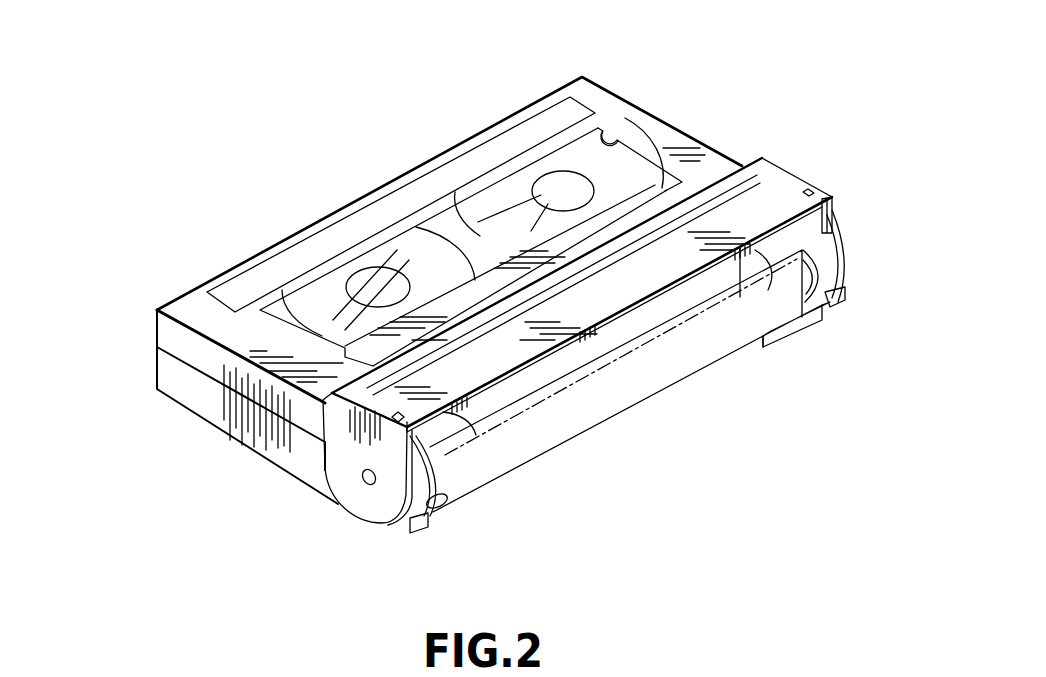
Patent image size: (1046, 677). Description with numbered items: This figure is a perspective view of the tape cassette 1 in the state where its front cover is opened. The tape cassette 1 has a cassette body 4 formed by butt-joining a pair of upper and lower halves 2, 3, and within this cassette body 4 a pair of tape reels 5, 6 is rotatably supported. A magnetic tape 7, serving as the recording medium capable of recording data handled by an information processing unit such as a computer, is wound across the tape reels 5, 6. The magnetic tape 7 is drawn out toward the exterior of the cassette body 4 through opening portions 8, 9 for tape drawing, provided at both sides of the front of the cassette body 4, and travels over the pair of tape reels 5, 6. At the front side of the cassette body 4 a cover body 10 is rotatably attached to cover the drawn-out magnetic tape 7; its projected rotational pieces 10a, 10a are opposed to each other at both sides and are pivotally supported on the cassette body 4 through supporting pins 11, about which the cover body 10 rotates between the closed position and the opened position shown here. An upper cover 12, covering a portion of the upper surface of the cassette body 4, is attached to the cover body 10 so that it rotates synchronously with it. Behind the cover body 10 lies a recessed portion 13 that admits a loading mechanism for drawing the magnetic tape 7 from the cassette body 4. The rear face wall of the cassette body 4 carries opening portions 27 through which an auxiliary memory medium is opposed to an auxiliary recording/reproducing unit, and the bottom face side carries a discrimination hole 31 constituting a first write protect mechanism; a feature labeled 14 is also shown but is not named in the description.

The tape cassette 1 is at (299, 209).
The upper half 2 is at (155, 340).
The lower half 3 is at (220, 425).
The cassette body 4 is at (195, 405).
The tape reel 5 is at (625, 168).
The tape reel 6 is at (388, 250).
The magnetic tape 7 is at (615, 397).
The opening portion for tape drawing 8 is at (808, 312).
The opening portion for tape drawing 9 is at (432, 527).
The cover body 10 is at (643, 287).
The rotational piece 10a is at (835, 212).
The supporting pin 11 is at (363, 478).
The upper cover 12 is at (490, 285).
The recessed portion 13 is at (713, 295).
The tape guide notch 14 is at (613, 139).
The opening portion 27 is at (222, 273).
The discrimination hole 31 is at (753, 200).